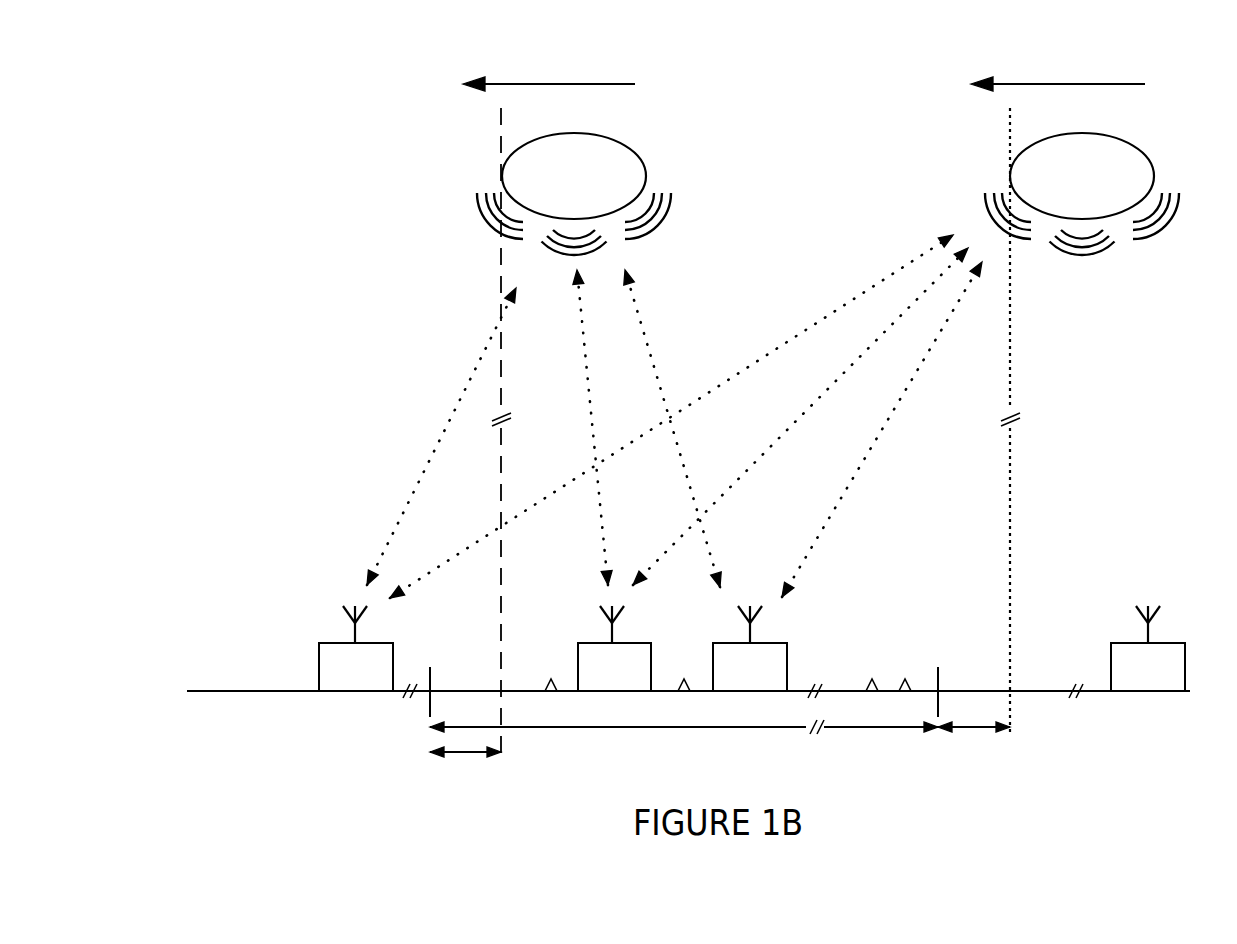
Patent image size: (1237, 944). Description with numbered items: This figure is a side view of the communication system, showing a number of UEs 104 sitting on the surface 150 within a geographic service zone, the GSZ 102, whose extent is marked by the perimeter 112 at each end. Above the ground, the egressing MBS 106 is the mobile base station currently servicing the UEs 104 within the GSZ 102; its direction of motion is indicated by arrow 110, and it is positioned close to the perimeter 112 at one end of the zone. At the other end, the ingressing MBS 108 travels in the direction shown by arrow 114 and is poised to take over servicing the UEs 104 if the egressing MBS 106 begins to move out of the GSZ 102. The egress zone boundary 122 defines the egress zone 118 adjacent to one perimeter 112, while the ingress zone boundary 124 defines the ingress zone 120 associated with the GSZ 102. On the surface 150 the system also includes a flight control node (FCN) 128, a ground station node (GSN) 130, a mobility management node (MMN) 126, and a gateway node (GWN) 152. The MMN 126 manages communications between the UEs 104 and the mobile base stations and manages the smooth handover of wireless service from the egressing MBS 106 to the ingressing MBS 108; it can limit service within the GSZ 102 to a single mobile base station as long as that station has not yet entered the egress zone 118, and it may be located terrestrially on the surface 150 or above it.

The GSZ 102 is at (684, 738).
The UEs 104 is at (874, 665).
The egressing MBS 106 is at (646, 171).
The ingressing MBS 108 is at (1154, 171).
The arrow 110 is at (518, 84).
The perimeter 112 is at (432, 677).
The arrow 114 is at (1028, 84).
The egress zone 118 is at (465, 764).
The ingress zone 120 is at (974, 739).
The egress zone boundary 122 is at (502, 630).
The ingress zone boundary 124 is at (1011, 630).
The mobility management node 126 is at (775, 643).
The flight control node 128 is at (380, 643).
The ground station node 130 is at (633, 643).
The surface 150 is at (1033, 690).
The gateway node 152 is at (1165, 643).